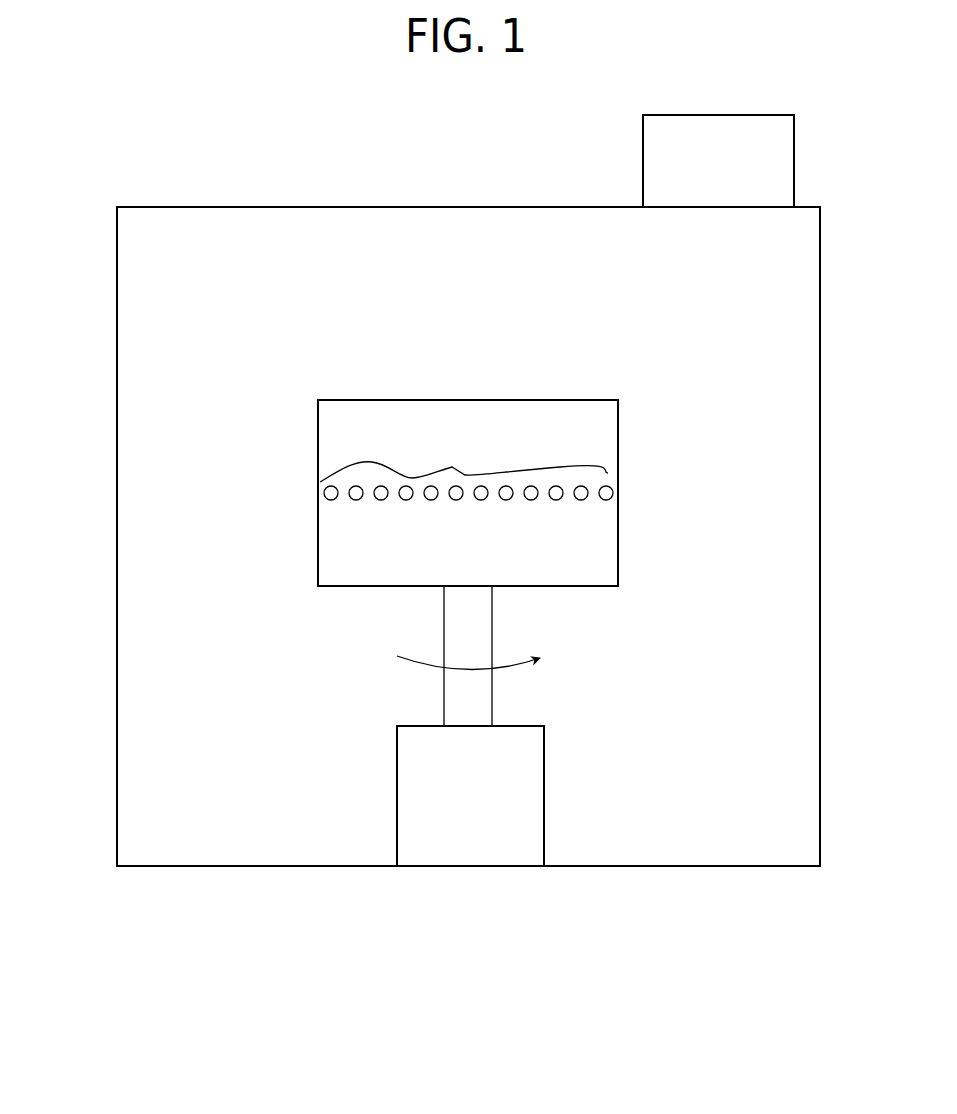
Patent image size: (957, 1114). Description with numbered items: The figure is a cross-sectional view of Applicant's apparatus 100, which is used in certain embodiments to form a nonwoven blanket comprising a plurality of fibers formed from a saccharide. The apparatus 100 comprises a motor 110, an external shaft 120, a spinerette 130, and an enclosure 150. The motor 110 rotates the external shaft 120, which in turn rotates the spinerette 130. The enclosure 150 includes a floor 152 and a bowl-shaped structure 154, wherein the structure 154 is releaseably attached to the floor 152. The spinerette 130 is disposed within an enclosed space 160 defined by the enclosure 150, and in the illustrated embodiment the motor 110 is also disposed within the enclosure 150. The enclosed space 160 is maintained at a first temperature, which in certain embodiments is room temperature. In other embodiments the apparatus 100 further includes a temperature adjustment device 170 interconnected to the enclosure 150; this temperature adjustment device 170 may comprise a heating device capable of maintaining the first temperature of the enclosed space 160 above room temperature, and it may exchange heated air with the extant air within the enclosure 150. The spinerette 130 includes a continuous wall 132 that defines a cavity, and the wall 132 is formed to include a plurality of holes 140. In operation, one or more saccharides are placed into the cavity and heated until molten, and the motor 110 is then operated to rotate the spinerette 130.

The apparatus 100 is at (601, 893).
The motor 110 is at (487, 810).
The external shaft 120 is at (485, 635).
The spinerette 130 is at (622, 420).
The continuous wall 132 is at (622, 515).
The holes 140 is at (453, 467).
The enclosure 150 is at (283, 203).
The floor 152 is at (260, 866).
The bowl-shaped structure 154 is at (116, 541).
The enclosed space 160 is at (218, 283).
The temperature adjustment device 170 is at (732, 176).